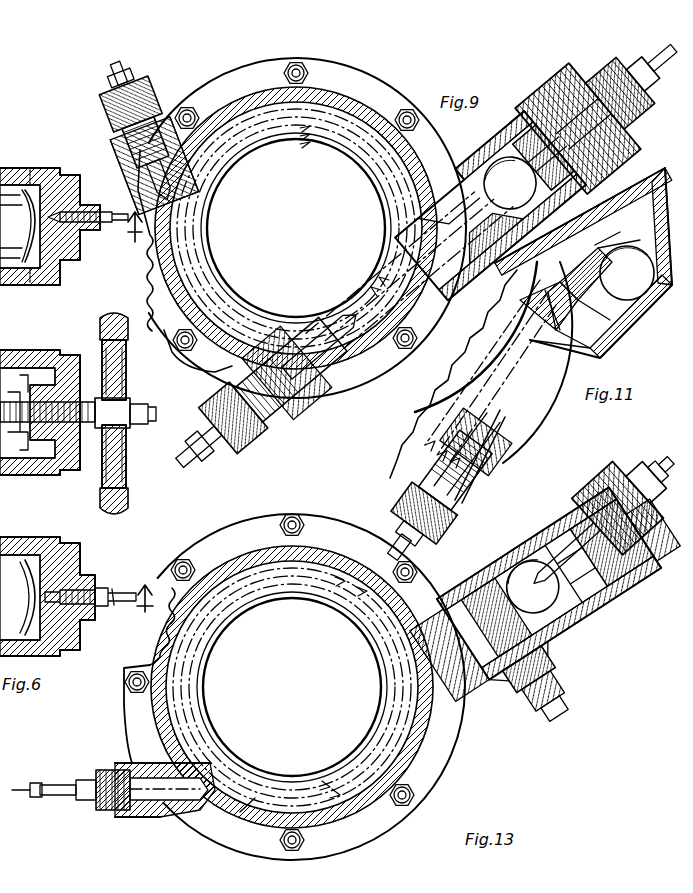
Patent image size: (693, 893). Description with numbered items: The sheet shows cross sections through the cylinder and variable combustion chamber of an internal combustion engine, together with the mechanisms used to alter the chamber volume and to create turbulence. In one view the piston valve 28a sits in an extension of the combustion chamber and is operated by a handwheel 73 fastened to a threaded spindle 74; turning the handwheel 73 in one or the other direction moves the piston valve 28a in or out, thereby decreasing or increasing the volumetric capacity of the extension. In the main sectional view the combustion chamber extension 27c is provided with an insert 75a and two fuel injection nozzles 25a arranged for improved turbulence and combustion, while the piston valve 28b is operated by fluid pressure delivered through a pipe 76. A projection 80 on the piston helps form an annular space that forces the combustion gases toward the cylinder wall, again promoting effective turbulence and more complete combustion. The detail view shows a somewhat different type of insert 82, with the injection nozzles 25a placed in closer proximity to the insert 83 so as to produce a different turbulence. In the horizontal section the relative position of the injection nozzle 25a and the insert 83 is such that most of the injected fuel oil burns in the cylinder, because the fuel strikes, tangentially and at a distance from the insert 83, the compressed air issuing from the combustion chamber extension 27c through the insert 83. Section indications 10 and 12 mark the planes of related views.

In FIG. 9, the section line / needle valve section 10 is at (135, 236).
In FIG. 13, the section line / needle valve section 10 is at (240, 812).
In FIG. 6, the section line / needle valve section 10 is at (64, 226).
In FIG. 13, the section line 12 is at (138, 605).
In FIG. 9, the fuel injection nozzle 25a is at (138, 100).
In FIG. 11, the fuel injection nozzle 25a is at (450, 522).
In FIG. 13, the fuel injection nozzle 25a is at (93, 816).
In FIG. 9, the combustion chamber extension 27c is at (451, 265).
In FIG. 11, the combustion chamber extension 27c is at (656, 324).
In FIG. 13, the combustion chamber extension 27c is at (543, 586).
In FIG. 9, the piston valve 28a is at (508, 159).
In FIG. 11, the piston valve 28b is at (587, 285).
In FIG. 6, the handwheel 73 is at (118, 357).
In FIG. 6, the threaded spindle 74 is at (100, 400).
In FIG. 9, the insert 75a is at (455, 228).
In FIG. 9, the pipe 76 is at (594, 108).
In FIG. 13, the pipe 76 is at (601, 522).
In FIG. 6, the pipe 76 is at (110, 588).
In FIG. 9, the projection on piston 80 is at (386, 251).
In FIG. 11, the projection on piston 80 is at (484, 382).
In FIG. 13, the projection on piston 80 is at (380, 676).
In FIG. 11, the insert 82 is at (596, 326).
In FIG. 13, the insert 83 is at (522, 698).